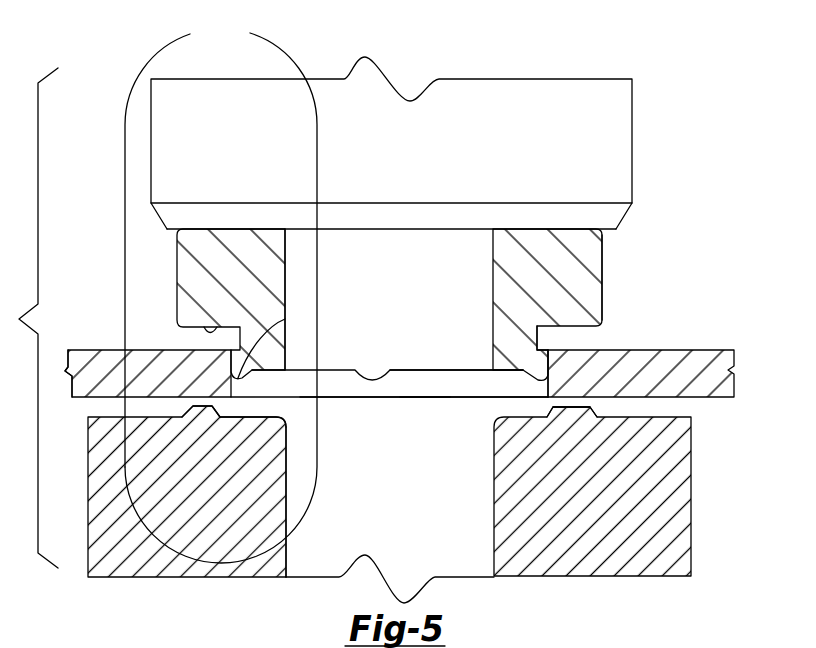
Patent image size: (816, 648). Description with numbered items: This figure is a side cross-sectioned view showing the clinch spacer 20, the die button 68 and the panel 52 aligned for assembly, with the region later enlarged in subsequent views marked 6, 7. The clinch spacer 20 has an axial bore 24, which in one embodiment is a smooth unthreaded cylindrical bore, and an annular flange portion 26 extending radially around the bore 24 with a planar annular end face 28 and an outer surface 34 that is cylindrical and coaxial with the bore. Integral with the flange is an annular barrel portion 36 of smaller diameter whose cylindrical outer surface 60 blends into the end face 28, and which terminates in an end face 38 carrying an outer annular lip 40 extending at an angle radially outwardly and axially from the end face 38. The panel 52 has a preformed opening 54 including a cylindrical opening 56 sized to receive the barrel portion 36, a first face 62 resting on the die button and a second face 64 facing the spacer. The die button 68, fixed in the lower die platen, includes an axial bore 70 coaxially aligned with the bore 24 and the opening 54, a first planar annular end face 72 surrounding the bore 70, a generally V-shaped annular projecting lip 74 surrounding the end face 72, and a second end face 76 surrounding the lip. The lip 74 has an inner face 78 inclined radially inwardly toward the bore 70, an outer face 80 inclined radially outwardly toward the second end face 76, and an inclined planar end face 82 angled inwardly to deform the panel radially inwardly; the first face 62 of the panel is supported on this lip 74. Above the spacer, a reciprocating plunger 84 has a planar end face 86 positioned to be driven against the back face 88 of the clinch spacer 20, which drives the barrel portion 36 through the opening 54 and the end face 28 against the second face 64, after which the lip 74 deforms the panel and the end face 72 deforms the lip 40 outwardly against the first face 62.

The detail view region (FIG. 6) 6 is at (221, 286).
The detail view region (FIG. 7) 7 is at (221, 286).
The clinch spacer 20 is at (167, 270).
The axial bore 24 is at (287, 280).
The annular flange portion 26 is at (606, 263).
The annular end face 28 is at (214, 328).
The outer surface 34 is at (602, 278).
The annular barrel portion 36 is at (288, 348).
The end face 38 is at (385, 370).
The outer annular lip 40 is at (543, 371).
The panel 52 is at (110, 339).
The opening 54 is at (375, 398).
The cylindrical opening 56 is at (285, 319).
The outer surface 60 is at (540, 344).
The first face 62 is at (710, 398).
The second face 64 is at (696, 349).
The die button 68 is at (147, 572).
The axial bore 70 is at (289, 498).
The first planar annular end face 72 is at (432, 412).
The annular projecting lip 74 is at (582, 403).
The second end face 76 is at (117, 415).
The inner face 78 is at (560, 409).
The outer face 80 is at (192, 408).
The inclined planar end face 82 is at (575, 406).
The reciprocating plunger 84 is at (632, 137).
The planar end face 86 is at (386, 234).
The back face 88 is at (563, 228).